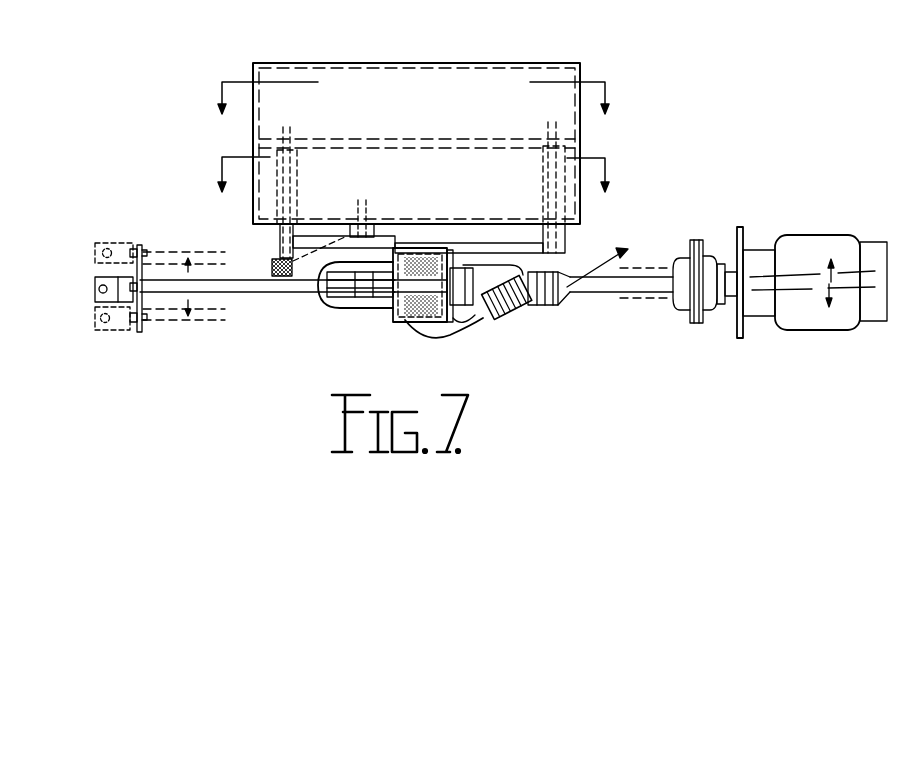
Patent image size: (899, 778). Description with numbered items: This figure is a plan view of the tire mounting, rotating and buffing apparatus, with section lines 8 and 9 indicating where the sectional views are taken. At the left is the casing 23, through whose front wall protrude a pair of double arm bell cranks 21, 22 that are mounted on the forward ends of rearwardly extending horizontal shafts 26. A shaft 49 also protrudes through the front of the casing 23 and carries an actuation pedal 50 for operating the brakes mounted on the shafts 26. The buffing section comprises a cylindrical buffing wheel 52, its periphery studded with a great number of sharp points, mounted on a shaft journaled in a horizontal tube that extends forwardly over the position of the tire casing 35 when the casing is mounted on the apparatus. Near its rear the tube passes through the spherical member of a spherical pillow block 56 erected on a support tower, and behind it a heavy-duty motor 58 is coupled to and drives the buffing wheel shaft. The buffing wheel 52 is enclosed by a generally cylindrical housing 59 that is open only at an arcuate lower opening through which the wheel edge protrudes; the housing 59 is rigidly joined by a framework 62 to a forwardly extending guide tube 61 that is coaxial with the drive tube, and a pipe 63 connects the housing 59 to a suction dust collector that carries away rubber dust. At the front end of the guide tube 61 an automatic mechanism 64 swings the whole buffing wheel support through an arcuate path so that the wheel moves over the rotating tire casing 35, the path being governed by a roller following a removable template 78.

The section line 8- 8 is at (414, 112).
The section line 9- 9 is at (414, 189).
The double arm bell crank 21 is at (270, 243).
The double arm bell crank 22 is at (572, 240).
The casing 23 is at (254, 131).
The horizontal shaft 26 is at (262, 156).
The tire casing 35 is at (328, 308).
The shaft 49 is at (370, 213).
The actuation pedal 50 is at (282, 278).
The buffing wheel 52 is at (398, 330).
The spherical pillow block 56 is at (718, 245).
The motor 58 is at (818, 234).
The housing 59 is at (397, 318).
The guide tube 61 is at (257, 295).
The framework 62 is at (370, 299).
The pipe 63 is at (480, 327).
The automatic mechanism 64 is at (75, 306).
The removable template 78 is at (145, 308).